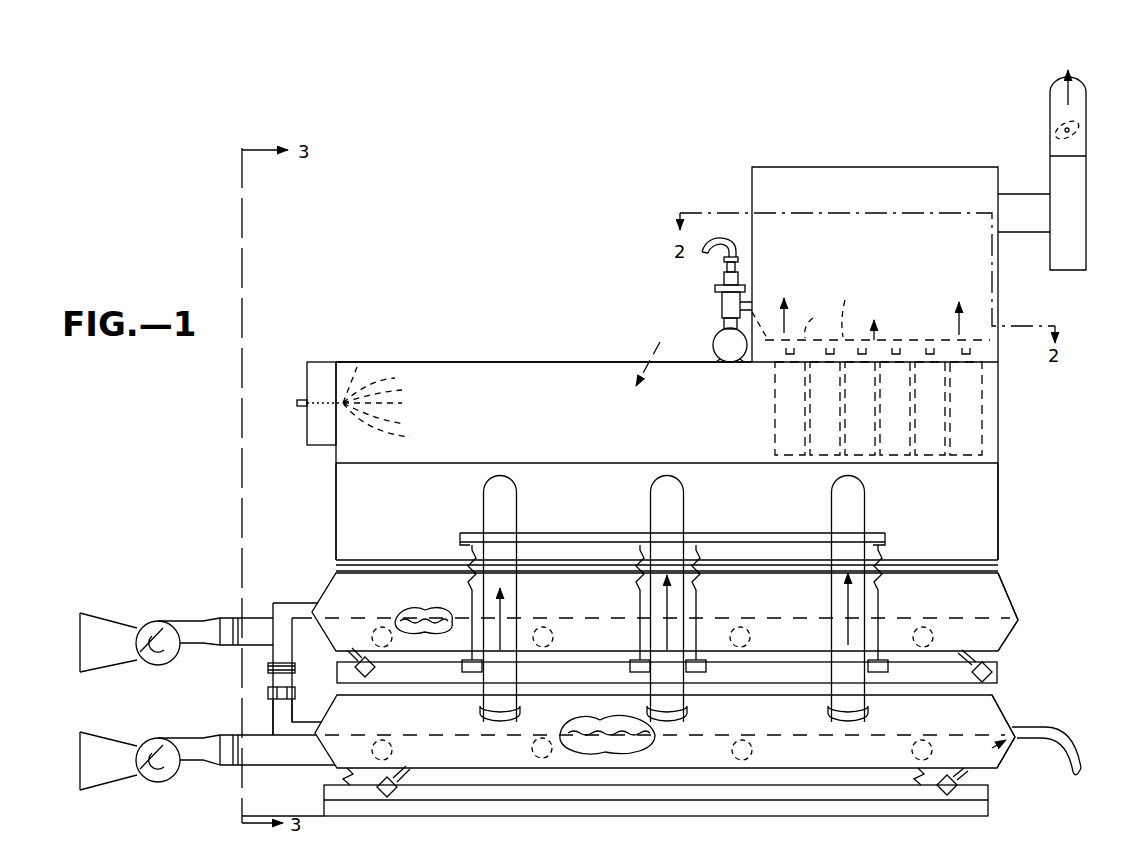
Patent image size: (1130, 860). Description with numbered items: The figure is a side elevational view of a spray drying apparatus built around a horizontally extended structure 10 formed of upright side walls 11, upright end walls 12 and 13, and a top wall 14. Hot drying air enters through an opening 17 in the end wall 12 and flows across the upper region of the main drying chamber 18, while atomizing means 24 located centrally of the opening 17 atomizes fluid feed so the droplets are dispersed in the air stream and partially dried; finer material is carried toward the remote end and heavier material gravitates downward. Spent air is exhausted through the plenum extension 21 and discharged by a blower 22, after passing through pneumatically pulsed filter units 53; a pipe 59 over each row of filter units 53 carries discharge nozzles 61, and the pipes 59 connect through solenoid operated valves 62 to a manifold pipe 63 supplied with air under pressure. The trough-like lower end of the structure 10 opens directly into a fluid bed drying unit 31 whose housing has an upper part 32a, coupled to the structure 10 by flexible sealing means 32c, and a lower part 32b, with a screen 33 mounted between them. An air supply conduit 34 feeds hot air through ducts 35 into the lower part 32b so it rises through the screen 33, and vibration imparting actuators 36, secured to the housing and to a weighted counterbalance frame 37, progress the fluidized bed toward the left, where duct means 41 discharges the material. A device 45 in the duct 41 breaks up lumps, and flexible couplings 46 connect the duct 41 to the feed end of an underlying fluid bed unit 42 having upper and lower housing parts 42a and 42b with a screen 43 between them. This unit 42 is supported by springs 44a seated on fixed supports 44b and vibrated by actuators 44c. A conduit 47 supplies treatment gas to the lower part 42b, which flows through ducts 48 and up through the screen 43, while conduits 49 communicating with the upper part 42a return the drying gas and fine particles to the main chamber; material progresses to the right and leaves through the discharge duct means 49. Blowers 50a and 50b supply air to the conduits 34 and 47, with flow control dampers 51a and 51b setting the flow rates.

The structure 10 is at (312, 487).
The upright side walls 11 is at (592, 364).
The upright end wall 12 is at (336, 542).
The upright end wall 13 is at (1000, 492).
The top wall 14 is at (516, 362).
The opening 17 is at (336, 398).
The main drying chamber 18 is at (659, 350).
The plenum extension 21 is at (752, 181).
The blower 22 is at (1050, 167).
The atomizing means 24 is at (355, 368).
The drying unit 31 is at (398, 598).
The upper housing part 32a is at (1003, 598).
The lower housing part 32b is at (1003, 634).
The flexible sealing means 32c is at (1000, 567).
The screen 33 is at (416, 611).
The air supply conduit 34 is at (262, 620).
The ducts 35 is at (380, 628).
The vibration imparting actuators 36 is at (356, 670).
The weighted counterbalance frame 37 is at (725, 683).
The duct means 41 is at (282, 605).
The underlying unit 42 is at (1008, 748).
The upper housing part 42a is at (1000, 718).
The lower housing part 42b is at (990, 768).
The screen 43 is at (588, 722).
The springs 44a is at (352, 790).
The fixed supports 44b is at (648, 816).
The actuators 44c is at (390, 798).
The device 45 is at (268, 694).
The flexible couplings 46 is at (268, 668).
The conduit 47 is at (288, 758).
The ducts 48 is at (392, 750).
The conduits 49 is at (484, 502).
The blower 50a is at (160, 665).
The blower 50b is at (175, 781).
The flow control damper 51a is at (230, 616).
The flow control damper 51b is at (233, 766).
The filter units 53 is at (972, 417).
The pipe 59 is at (871, 317).
The discharge nozzles 61 is at (855, 308).
The solenoid operated valves 62 is at (740, 285).
The manifold pipe 63 is at (738, 357).